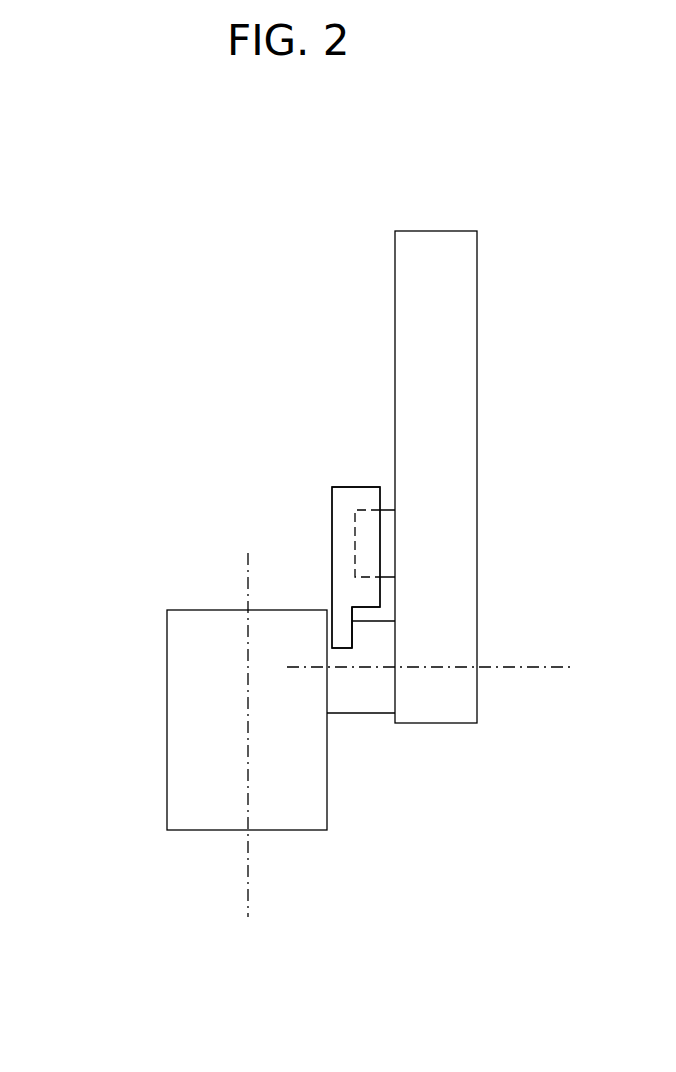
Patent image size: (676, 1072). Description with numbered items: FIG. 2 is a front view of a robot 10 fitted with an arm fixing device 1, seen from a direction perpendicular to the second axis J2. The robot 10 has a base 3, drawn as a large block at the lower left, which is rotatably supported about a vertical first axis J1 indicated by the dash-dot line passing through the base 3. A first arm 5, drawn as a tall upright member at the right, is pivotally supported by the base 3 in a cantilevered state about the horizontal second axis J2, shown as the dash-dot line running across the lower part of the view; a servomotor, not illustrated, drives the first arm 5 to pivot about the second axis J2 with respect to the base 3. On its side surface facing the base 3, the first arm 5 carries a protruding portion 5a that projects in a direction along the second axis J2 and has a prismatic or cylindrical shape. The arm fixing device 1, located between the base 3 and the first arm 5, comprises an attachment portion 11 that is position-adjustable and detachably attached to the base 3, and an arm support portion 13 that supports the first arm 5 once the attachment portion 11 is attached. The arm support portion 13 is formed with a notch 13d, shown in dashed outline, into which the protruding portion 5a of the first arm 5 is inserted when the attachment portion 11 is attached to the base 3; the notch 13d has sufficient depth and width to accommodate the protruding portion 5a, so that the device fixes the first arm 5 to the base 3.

The robot 10 is at (91, 298).
The arm fixing device 1 is at (322, 484).
The base 3 is at (167, 718).
The first arm 5 is at (477, 348).
The protruding portion 5a is at (384, 510).
The attachment portion 11 is at (354, 638).
The arm support portion 13 is at (332, 512).
The notch 13d is at (366, 574).
The first axis J1 is at (247, 890).
The second axis J2 is at (525, 667).